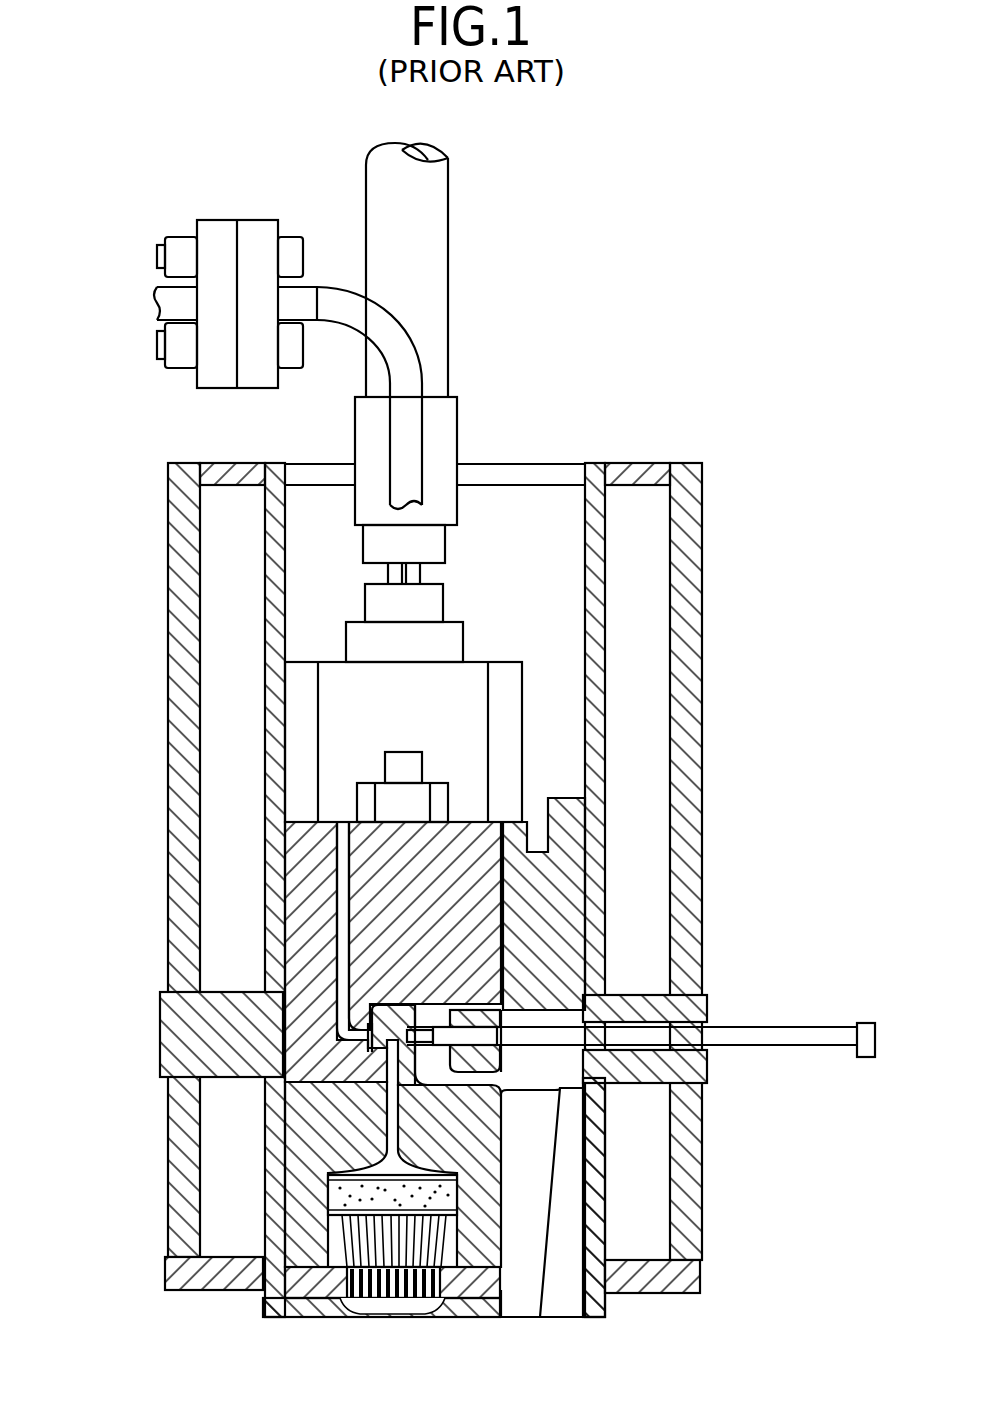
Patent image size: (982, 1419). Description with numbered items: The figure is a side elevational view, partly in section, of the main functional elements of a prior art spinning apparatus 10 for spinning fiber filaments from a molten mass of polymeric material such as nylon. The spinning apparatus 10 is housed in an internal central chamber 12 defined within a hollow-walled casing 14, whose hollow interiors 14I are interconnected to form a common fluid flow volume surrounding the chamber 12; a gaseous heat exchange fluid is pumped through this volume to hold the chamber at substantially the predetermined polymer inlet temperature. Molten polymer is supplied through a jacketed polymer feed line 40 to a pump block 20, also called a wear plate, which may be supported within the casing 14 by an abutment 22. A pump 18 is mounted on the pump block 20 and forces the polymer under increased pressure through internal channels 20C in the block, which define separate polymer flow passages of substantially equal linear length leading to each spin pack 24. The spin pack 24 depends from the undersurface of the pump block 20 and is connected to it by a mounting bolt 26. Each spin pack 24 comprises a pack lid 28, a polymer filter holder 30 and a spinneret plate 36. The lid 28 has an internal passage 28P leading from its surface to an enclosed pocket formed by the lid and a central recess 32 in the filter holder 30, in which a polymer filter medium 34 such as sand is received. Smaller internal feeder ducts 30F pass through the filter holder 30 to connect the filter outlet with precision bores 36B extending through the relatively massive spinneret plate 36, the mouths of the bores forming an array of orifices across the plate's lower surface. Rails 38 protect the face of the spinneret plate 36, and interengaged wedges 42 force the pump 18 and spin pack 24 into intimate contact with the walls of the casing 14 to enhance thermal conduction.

The spinning apparatus 10 is at (469, 765).
The internal central chamber 12 is at (516, 512).
The hollow-walled casing 14 is at (710, 665).
The hollow interiors of the casing walls 14I is at (632, 718).
The pump 18 is at (494, 655).
The pump block 20 is at (420, 926).
The internal channels 20C is at (344, 887).
The abutment 22 is at (540, 885).
The spin pack 24 is at (520, 1143).
The mounting bolt 26 is at (797, 1030).
The pack lid 28 is at (303, 1136).
The internal passage 28P is at (385, 1103).
The polymer filter holder 30 is at (350, 1197).
The internal feeder ducts 30F is at (520, 1293).
The central recess 32 is at (455, 1197).
The polymer filter medium 34 is at (353, 1312).
The spinneret plate 36 is at (450, 1300).
The precision bores 36B is at (395, 1300).
The rails 38 is at (381, 1328).
The jacketed polymer feed line 40 is at (412, 338).
The interengaged wedges 42 is at (540, 1192).